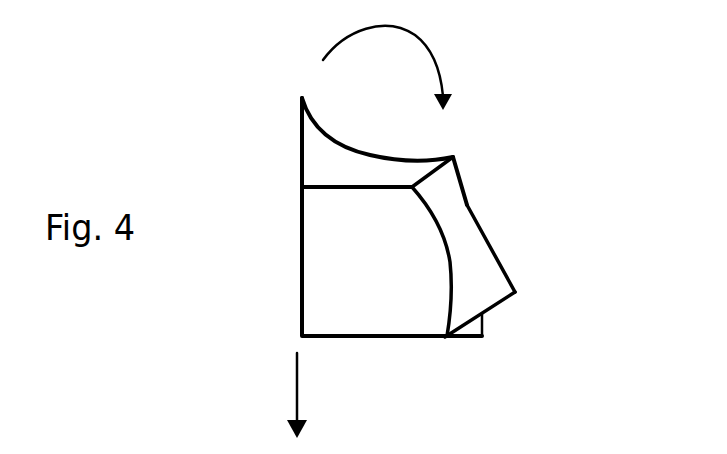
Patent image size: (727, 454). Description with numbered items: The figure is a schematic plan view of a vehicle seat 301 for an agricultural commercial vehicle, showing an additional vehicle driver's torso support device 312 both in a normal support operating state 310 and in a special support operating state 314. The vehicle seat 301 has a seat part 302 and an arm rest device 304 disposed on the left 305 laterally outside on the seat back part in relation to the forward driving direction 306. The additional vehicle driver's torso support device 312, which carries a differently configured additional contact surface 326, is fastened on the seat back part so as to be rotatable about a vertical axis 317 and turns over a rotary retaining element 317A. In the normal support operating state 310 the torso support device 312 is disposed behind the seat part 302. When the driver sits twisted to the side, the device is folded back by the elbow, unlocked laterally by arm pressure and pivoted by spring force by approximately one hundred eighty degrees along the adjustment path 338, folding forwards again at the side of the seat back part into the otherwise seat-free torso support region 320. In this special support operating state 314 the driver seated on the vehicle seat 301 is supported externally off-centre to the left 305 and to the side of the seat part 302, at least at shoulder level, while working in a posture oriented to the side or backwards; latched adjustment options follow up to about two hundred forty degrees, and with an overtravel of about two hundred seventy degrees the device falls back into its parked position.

The vehicle seat 301 is at (609, 97).
The seat part 302 is at (323, 293).
The arm rest device 304 is at (472, 333).
The left 305 is at (617, 254).
The forward driving direction 306 is at (296, 382).
The normal support operating state 310 is at (272, 128).
The additional vehicle driver's torso support device 312 is at (453, 228).
The special support operating state 314 is at (515, 322).
The vertical axis 317 is at (438, 182).
The rotary retaining element 317A is at (456, 194).
The otherwise seat-free torso support region 320 is at (523, 242).
The additional contact surface 326 is at (363, 138).
The adjustment path 338 is at (440, 68).